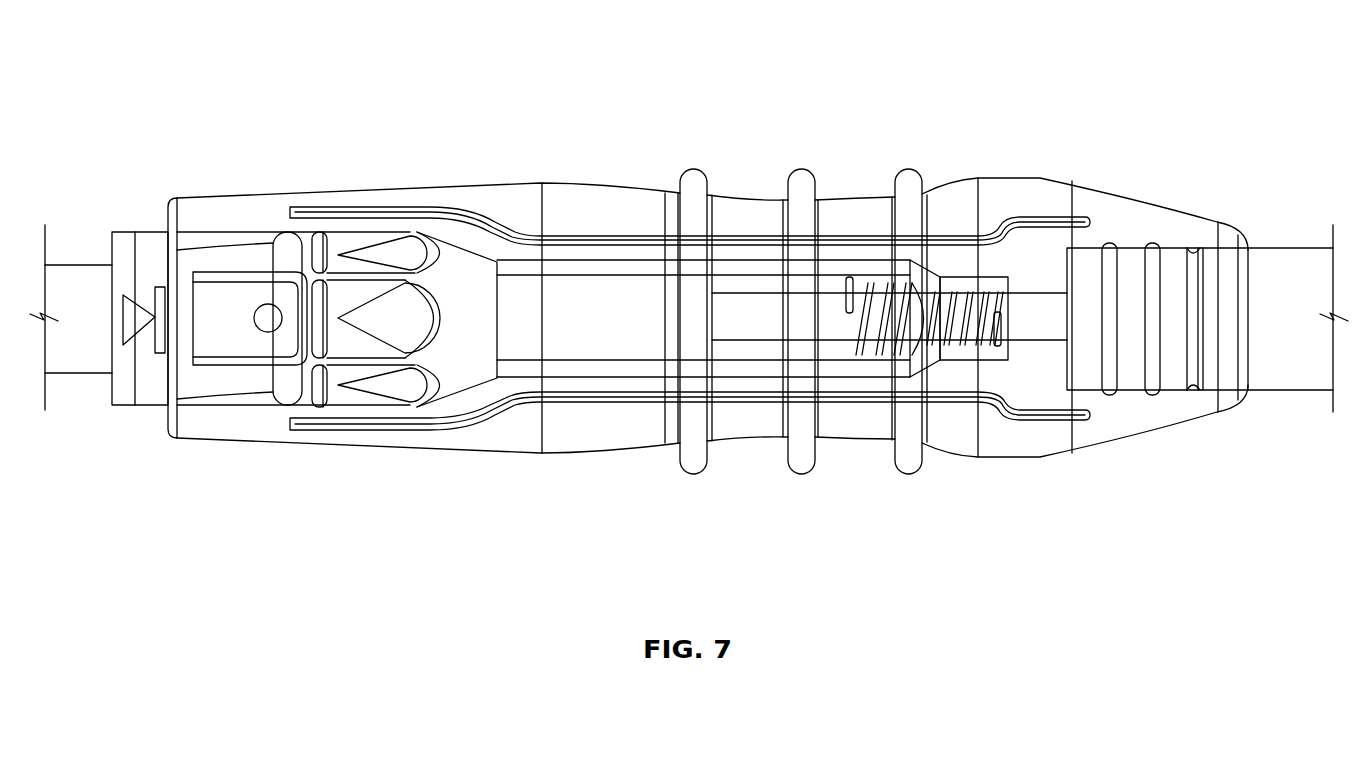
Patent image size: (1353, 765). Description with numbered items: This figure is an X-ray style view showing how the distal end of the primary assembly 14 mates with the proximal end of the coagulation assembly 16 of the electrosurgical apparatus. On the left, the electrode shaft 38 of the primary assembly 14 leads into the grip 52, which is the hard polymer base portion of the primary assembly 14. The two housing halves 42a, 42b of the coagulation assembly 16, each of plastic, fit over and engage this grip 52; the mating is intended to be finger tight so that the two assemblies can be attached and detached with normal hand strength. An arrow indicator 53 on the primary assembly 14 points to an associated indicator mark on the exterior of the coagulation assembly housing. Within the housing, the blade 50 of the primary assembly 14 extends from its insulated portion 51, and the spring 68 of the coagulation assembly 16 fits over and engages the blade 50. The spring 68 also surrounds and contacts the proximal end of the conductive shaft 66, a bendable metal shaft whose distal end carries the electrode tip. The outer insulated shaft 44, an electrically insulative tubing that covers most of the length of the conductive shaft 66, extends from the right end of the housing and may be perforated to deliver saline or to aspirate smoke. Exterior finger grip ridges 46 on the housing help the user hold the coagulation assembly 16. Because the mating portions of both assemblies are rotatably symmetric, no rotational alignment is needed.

The primary assembly 14 is at (652, 329).
The coagulation assembly 16 is at (1139, 306).
The electrode shaft 38 is at (92, 360).
The housing half 42a is at (572, 195).
The housing half 42b is at (556, 433).
The insulated shaft 44 is at (1273, 262).
The finger grip ridges 46 is at (693, 170).
The blade 50 is at (740, 342).
The insulated portion 51 is at (535, 303).
The grip 52 is at (237, 257).
The arrow indicator 53 is at (125, 316).
The conductive shaft 66 is at (1030, 332).
The spring 68 is at (870, 280).